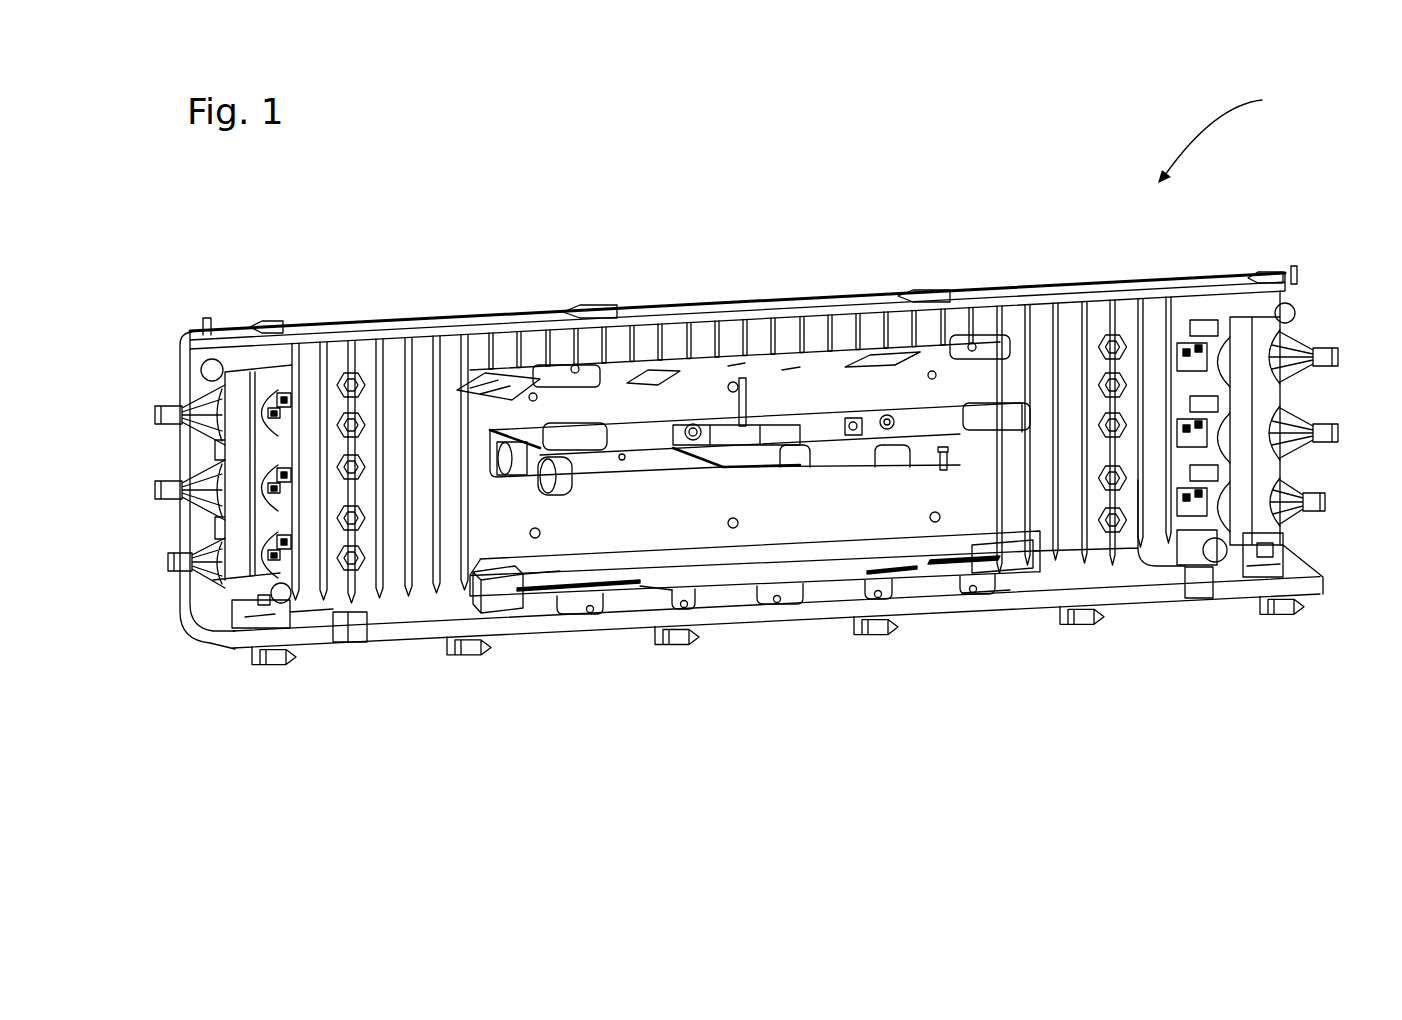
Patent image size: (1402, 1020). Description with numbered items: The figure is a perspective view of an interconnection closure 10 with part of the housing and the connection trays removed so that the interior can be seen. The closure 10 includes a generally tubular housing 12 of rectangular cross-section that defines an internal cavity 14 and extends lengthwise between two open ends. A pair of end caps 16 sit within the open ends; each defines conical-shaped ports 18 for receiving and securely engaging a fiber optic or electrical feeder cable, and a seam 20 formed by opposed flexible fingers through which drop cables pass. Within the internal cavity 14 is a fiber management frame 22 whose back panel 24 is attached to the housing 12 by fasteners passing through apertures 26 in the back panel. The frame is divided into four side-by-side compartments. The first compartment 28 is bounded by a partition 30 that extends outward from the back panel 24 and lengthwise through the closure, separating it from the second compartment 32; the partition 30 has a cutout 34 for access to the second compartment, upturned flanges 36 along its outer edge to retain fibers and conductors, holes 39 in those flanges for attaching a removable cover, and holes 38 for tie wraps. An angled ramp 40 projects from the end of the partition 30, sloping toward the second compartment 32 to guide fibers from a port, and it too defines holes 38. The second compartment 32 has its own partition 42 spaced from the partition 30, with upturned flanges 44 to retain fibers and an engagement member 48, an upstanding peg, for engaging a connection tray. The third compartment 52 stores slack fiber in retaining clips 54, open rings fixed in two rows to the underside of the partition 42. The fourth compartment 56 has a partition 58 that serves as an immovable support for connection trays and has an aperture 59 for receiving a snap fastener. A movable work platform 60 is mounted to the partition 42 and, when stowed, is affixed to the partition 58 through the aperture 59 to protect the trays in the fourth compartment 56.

The closure 10 is at (1228, 134).
The housing 12 is at (811, 297).
The internal cavity 14 is at (1103, 568).
The end caps 16 is at (200, 527).
The conical-shaped ports 18 is at (180, 477).
The seam 20 is at (238, 608).
The fiber management frame 22 is at (918, 545).
The back panel 24 is at (736, 530).
The apertures 26 is at (708, 554).
The first compartment 28 is at (735, 350).
The partition 30 is at (900, 357).
The second compartment 32 is at (623, 368).
The cutout 34 is at (790, 350).
The upturned flanges 36 is at (1004, 350).
The holes 38 is at (460, 383).
The holes 39 is at (973, 343).
The angled ramp 40 is at (485, 377).
The partition 42 is at (657, 434).
The upturned flanges 44 is at (582, 437).
The engagement member 48 is at (747, 397).
The third compartment 52 is at (510, 490).
The retaining clips 54 is at (560, 480).
The fourth compartment 56 is at (568, 557).
The partition 58 is at (662, 575).
The aperture 59 is at (987, 590).
The movable work platform 60 is at (830, 458).